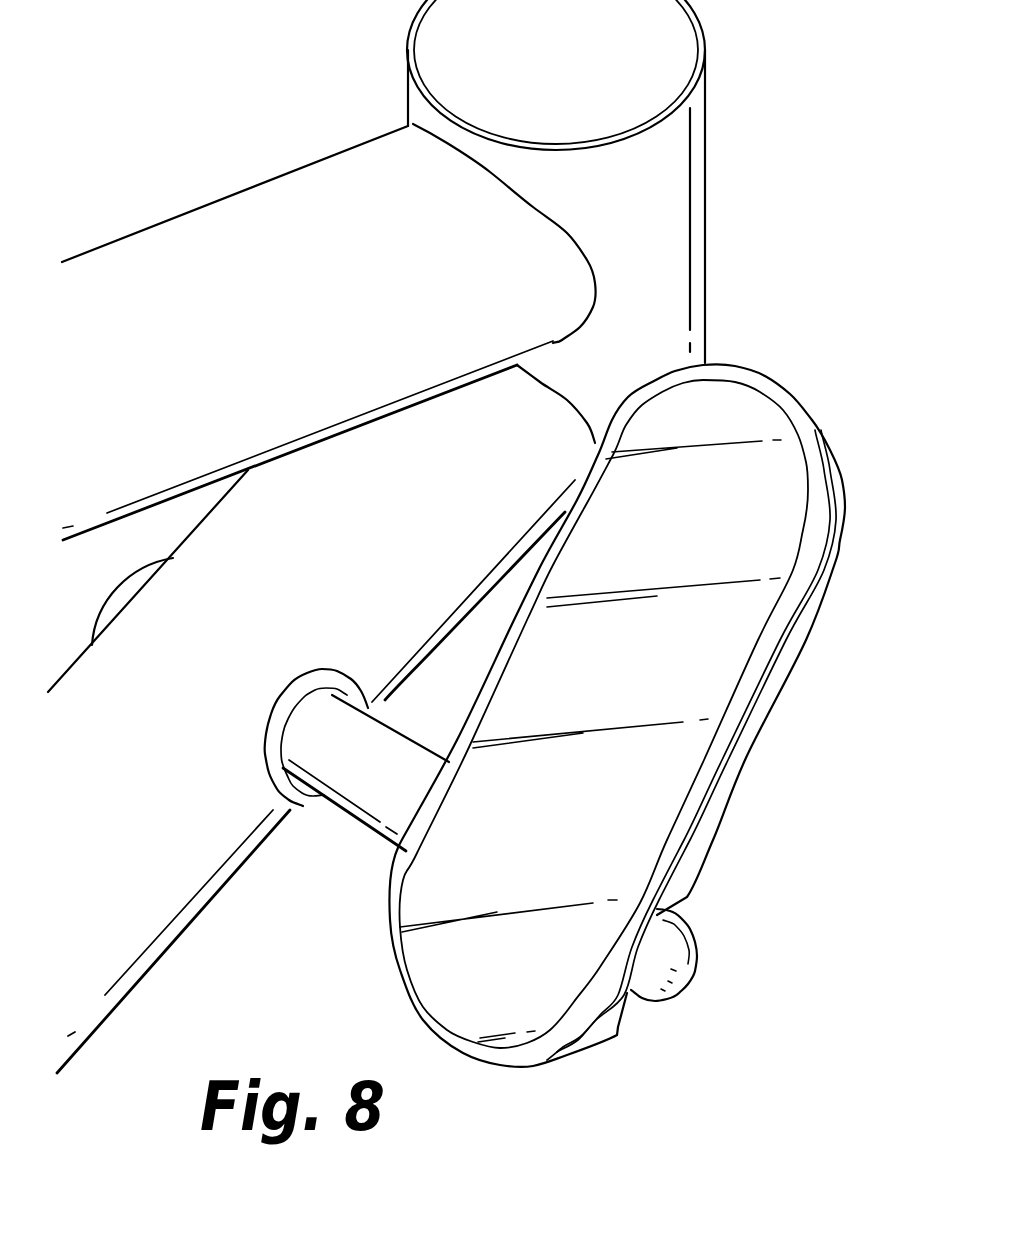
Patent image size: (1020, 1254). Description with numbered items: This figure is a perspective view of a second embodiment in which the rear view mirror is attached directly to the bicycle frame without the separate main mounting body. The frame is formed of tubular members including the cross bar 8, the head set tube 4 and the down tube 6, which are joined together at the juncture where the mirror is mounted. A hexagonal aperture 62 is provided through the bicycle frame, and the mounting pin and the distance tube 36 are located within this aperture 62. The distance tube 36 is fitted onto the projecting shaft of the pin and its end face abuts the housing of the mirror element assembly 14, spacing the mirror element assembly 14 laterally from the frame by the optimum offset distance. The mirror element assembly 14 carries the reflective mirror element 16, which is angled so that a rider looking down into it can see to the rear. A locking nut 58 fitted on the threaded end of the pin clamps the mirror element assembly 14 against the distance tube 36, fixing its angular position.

The head set tube 4 is at (673, 223).
The cross bar 8 is at (175, 245).
The down tube 6 is at (178, 902).
The mirror element assembly 14 is at (813, 397).
The reflective mirror element 16 is at (590, 741).
The distance tube 36 is at (372, 807).
The hexagonal aperture 62 is at (305, 805).
The locking nut 58 is at (667, 970).